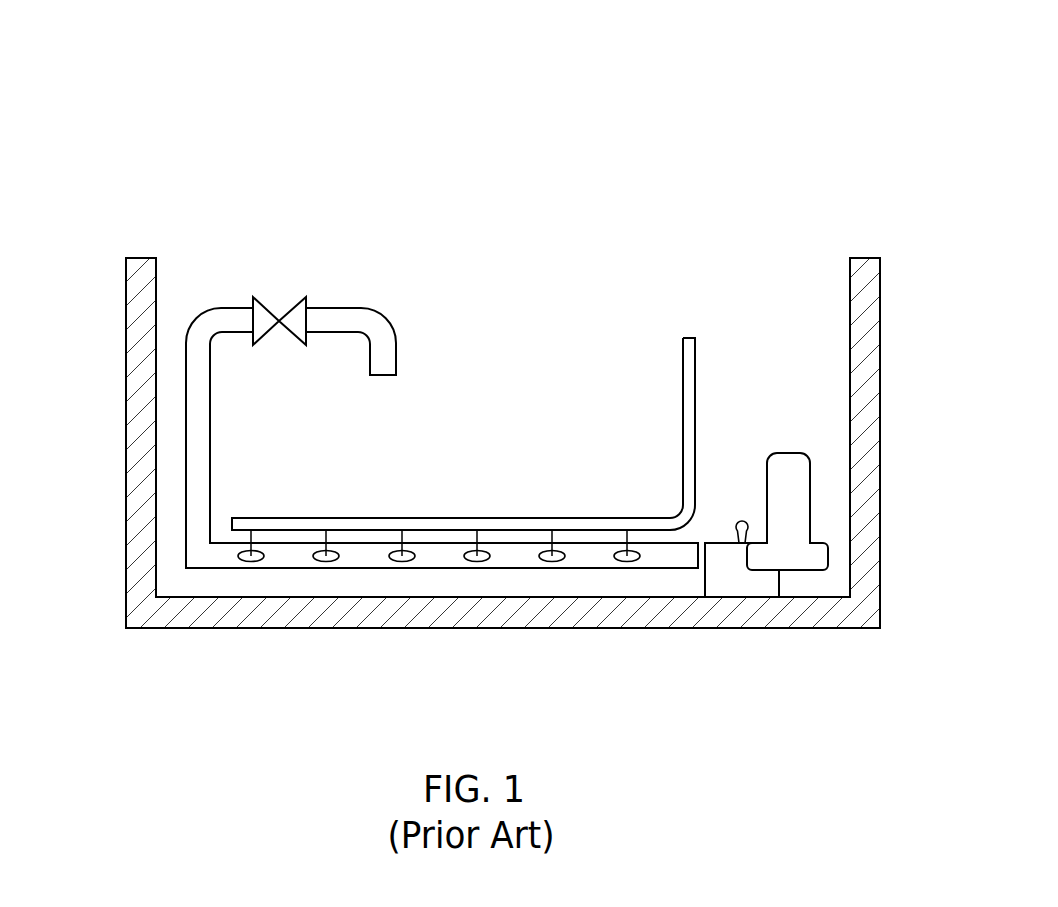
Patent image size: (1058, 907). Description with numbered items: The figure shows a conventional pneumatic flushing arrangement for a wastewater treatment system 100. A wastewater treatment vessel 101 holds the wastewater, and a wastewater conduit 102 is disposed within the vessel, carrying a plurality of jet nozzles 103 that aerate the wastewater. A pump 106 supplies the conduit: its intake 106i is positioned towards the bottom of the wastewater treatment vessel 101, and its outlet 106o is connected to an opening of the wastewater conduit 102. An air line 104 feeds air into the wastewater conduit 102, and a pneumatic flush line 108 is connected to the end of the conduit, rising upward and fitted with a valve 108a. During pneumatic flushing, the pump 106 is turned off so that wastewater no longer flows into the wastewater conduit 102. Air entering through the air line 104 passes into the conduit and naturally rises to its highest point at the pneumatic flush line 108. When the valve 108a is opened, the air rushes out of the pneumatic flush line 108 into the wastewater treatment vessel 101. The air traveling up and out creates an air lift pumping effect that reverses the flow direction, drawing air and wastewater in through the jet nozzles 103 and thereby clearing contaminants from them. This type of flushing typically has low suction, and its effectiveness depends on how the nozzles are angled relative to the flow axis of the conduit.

The wastewater treatment system 100 is at (393, 67).
The wastewater treatment vessel 101 is at (118, 318).
The wastewater conduit 102 is at (362, 552).
The jet nozzles 103 is at (456, 554).
The air line 104 is at (688, 330).
The pump 106 is at (813, 500).
The outlet 106o is at (738, 520).
The intake 106i is at (798, 573).
The pneumatic flush line 108 is at (442, 396).
The valve 108a is at (273, 297).